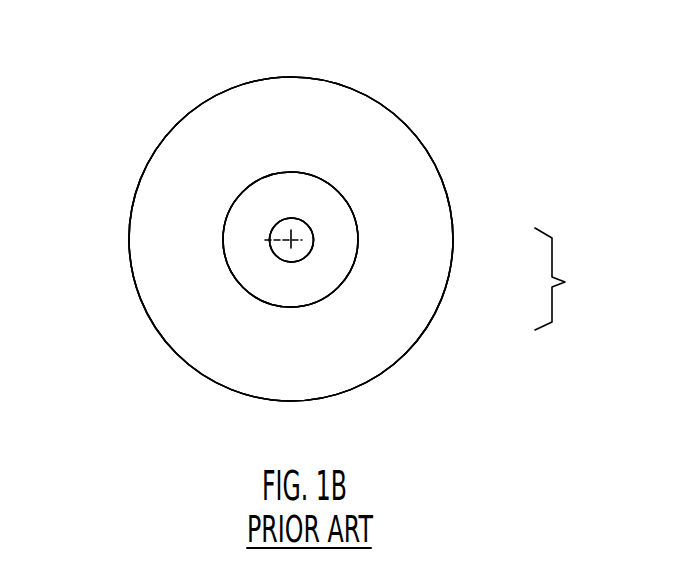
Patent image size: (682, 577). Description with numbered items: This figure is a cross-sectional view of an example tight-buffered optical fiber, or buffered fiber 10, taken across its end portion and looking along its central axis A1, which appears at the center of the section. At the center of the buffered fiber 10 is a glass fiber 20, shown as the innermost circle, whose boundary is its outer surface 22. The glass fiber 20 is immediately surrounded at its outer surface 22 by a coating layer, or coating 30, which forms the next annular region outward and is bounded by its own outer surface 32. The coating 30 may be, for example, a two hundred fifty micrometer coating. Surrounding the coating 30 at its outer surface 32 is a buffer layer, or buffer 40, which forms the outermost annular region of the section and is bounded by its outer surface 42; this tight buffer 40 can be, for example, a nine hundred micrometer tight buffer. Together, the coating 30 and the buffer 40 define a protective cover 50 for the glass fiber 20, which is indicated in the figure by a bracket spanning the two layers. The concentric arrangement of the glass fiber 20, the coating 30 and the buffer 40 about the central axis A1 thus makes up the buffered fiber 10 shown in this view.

The tight-buffered optical fiber 10 is at (123, 86).
The glass fiber 20 is at (268, 240).
The outer surface of glass fiber 22 is at (277, 222).
The coating layer 30 is at (342, 258).
The outer surface of coating layer 32 is at (327, 298).
The buffer layer 40 is at (415, 250).
The outer surface of buffer layer 42 is at (448, 197).
The protective cover 50 is at (562, 279).
The central axis A1 is at (296, 236).